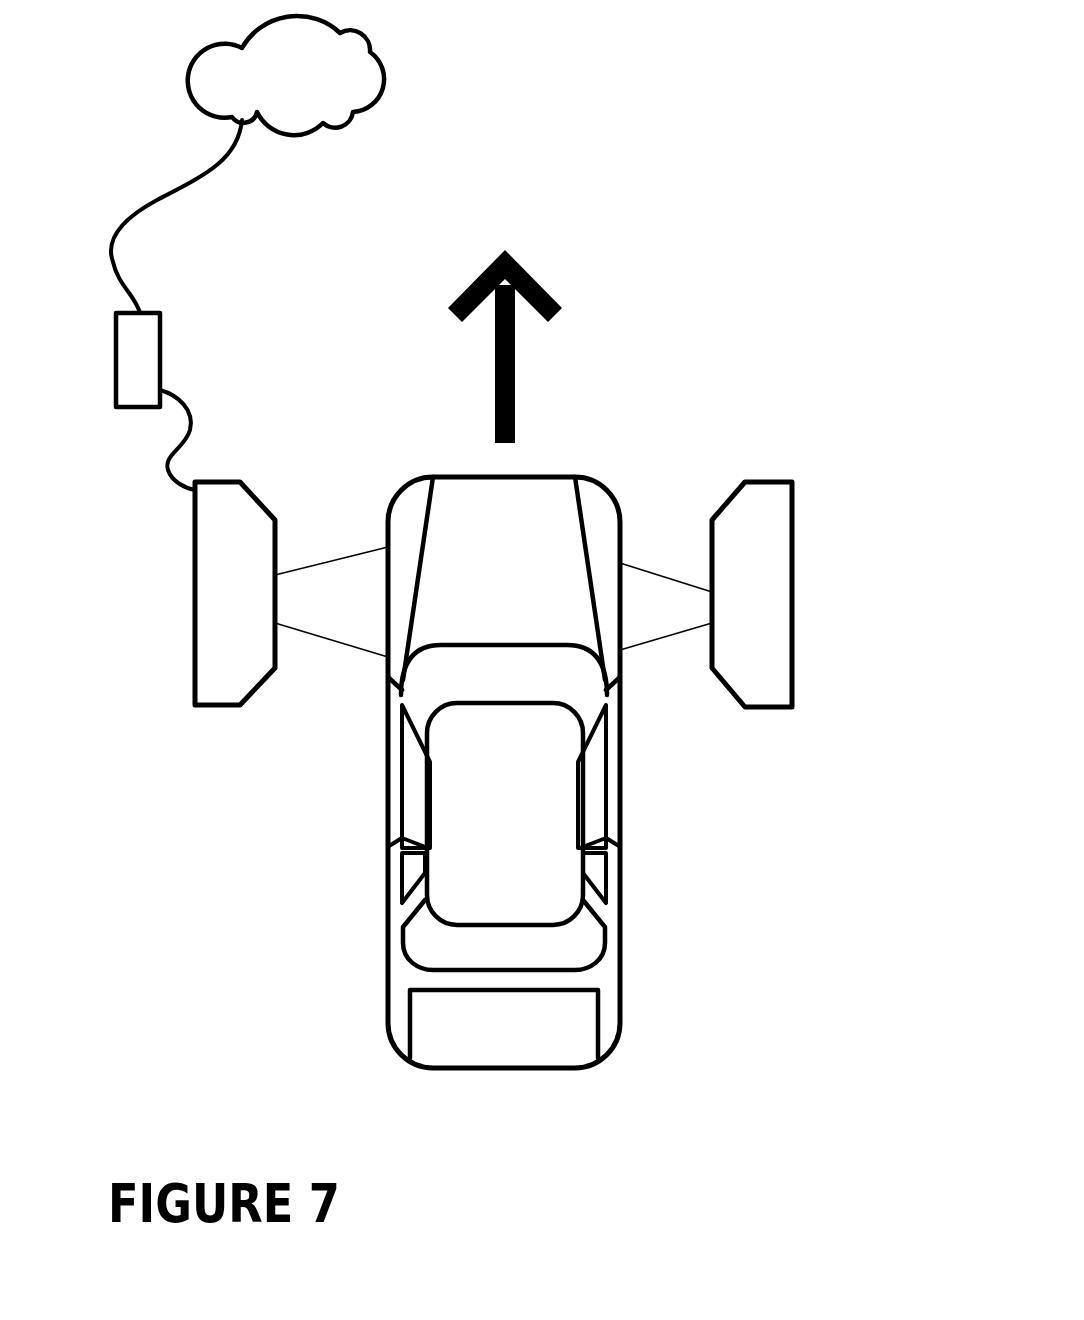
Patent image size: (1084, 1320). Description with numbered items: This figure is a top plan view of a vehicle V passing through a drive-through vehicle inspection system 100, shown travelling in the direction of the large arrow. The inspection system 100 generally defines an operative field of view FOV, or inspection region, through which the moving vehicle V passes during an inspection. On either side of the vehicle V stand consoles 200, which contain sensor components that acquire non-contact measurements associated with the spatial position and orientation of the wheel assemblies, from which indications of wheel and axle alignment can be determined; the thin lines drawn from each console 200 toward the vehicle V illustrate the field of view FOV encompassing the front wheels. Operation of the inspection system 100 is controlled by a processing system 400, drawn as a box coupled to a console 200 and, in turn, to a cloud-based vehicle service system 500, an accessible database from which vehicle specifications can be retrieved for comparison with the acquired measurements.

The cloud-based vehicle service system 500 is at (405, 66).
The processing system 400 is at (165, 338).
The consoles 200 is at (230, 590).
The drive-through vehicle inspection system 100 is at (657, 353).
The vehicle V is at (455, 518).
The field of view FOV is at (335, 614).